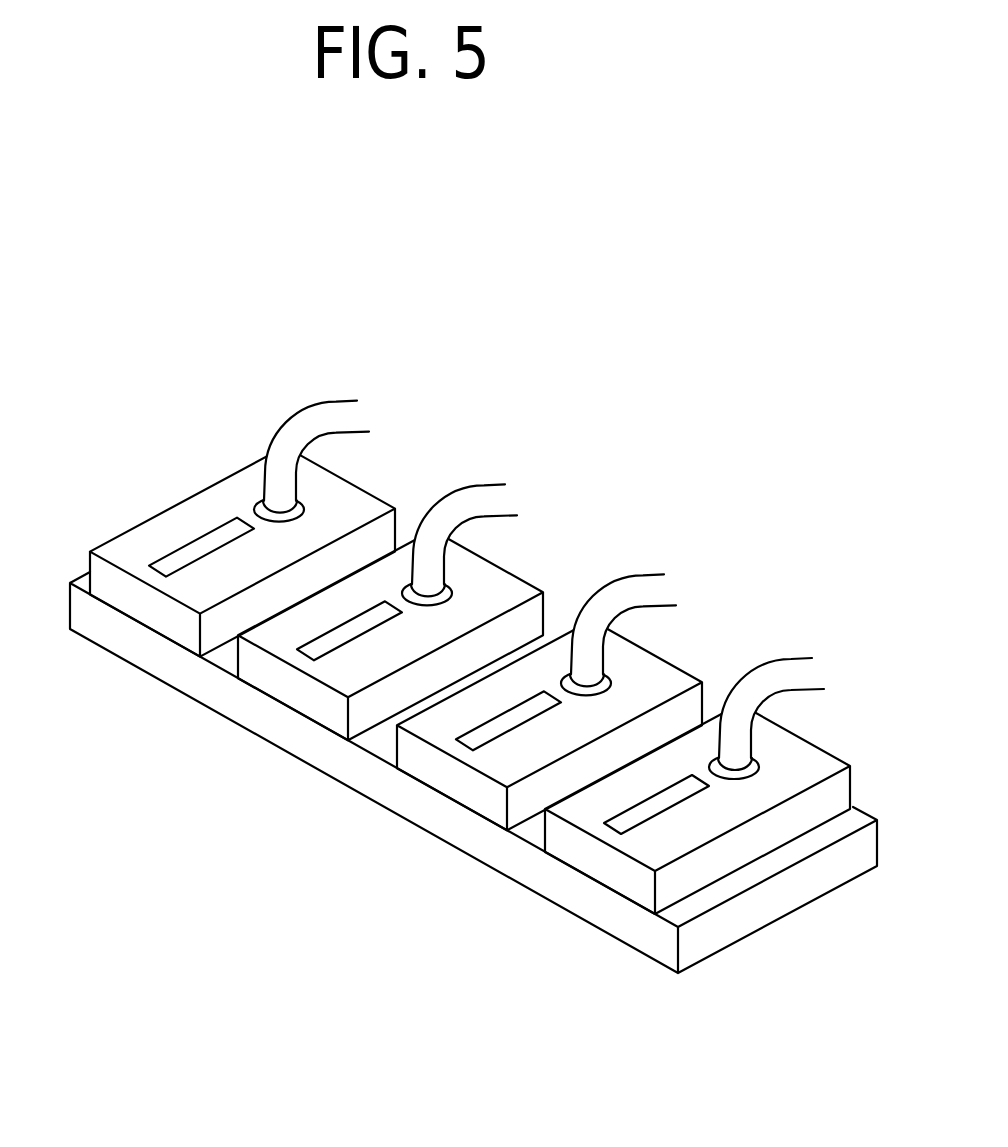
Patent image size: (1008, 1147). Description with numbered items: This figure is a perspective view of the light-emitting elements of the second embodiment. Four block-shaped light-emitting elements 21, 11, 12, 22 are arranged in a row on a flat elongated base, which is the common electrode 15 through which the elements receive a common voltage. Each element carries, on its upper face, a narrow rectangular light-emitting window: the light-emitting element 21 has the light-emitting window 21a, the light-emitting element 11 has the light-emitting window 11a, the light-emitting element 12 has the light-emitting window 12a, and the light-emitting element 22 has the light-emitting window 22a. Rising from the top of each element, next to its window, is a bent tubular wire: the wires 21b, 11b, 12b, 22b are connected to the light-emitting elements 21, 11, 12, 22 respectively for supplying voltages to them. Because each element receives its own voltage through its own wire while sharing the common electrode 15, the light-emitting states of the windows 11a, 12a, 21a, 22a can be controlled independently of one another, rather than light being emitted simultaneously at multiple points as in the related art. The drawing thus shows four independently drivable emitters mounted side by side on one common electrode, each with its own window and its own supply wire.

The common electrode 15 is at (167, 662).
The light-emitting element 11 is at (359, 596).
The light-emitting window 11a is at (310, 650).
The wire 11b is at (464, 503).
The light-emitting element 12 is at (521, 684).
The light-emitting window 12a is at (465, 738).
The wire 12b is at (628, 593).
The light-emitting element 21 is at (249, 489).
The light-emitting window 21a is at (200, 550).
The wire 21b is at (313, 418).
The light-emitting element 22 is at (721, 778).
The light-emitting window 22a is at (667, 802).
The wire 22b is at (782, 673).